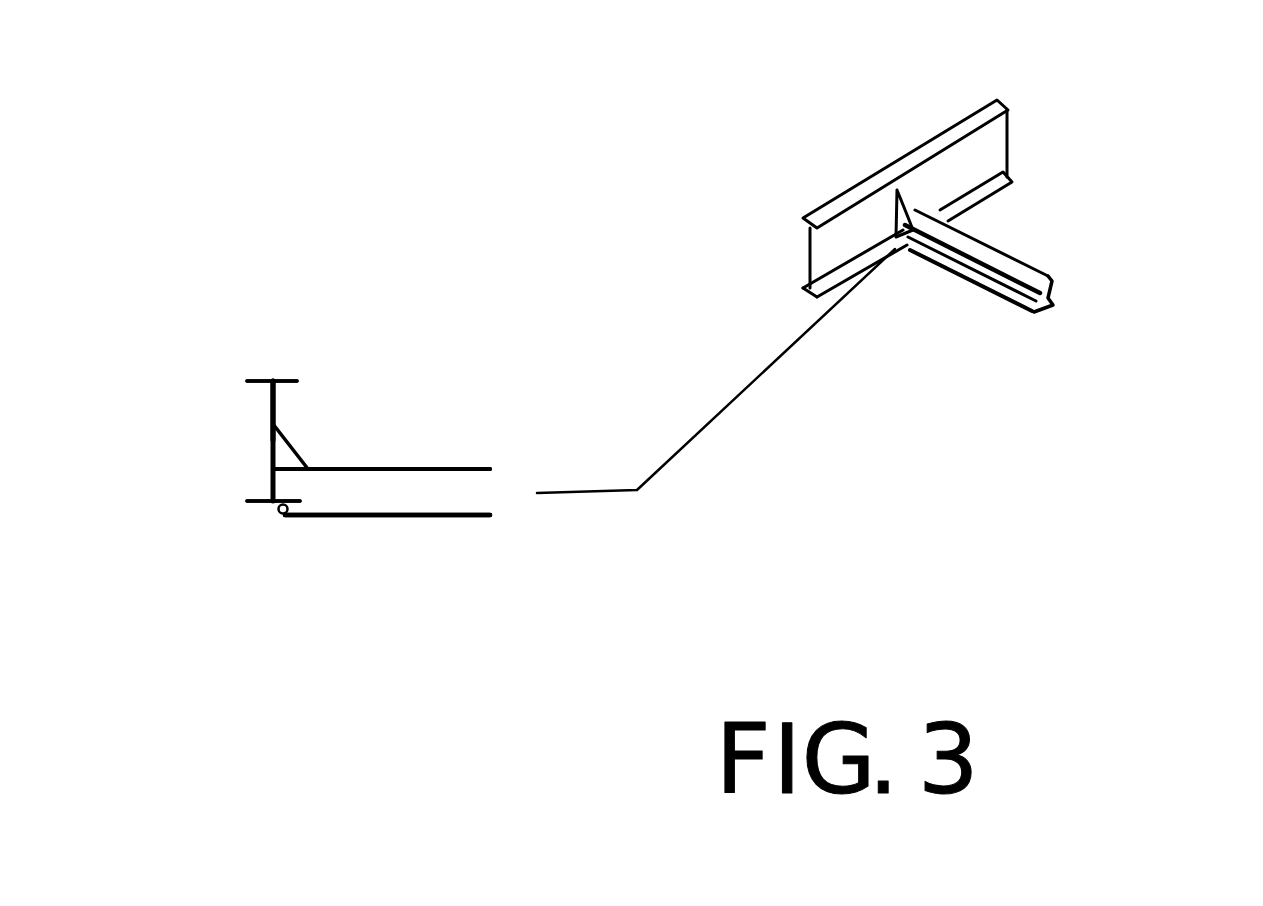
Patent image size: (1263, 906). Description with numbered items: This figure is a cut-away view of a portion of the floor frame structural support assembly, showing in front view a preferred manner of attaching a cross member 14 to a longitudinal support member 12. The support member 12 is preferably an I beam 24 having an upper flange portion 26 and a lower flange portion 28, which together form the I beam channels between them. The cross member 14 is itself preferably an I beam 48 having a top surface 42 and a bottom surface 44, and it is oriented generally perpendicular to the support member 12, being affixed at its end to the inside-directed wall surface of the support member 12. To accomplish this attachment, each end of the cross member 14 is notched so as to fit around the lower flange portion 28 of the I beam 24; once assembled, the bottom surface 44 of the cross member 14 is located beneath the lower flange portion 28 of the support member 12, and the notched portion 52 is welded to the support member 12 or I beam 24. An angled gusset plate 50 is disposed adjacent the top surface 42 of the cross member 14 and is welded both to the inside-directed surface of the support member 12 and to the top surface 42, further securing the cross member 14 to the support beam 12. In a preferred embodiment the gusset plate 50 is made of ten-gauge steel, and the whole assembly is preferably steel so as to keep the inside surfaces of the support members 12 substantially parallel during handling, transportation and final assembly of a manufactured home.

The longitudinal support member 12 is at (249, 360).
The cross member 14 is at (425, 464).
The I beam 24 is at (273, 381).
The upper flange portion 26 is at (253, 386).
The lower flange portion 28 is at (263, 504).
The top surface 42 is at (490, 462).
The bottom surface 44 is at (433, 515).
The I beam 48 is at (427, 488).
The angled gusset plate 50 is at (295, 448).
The notched portion 52 is at (296, 517).